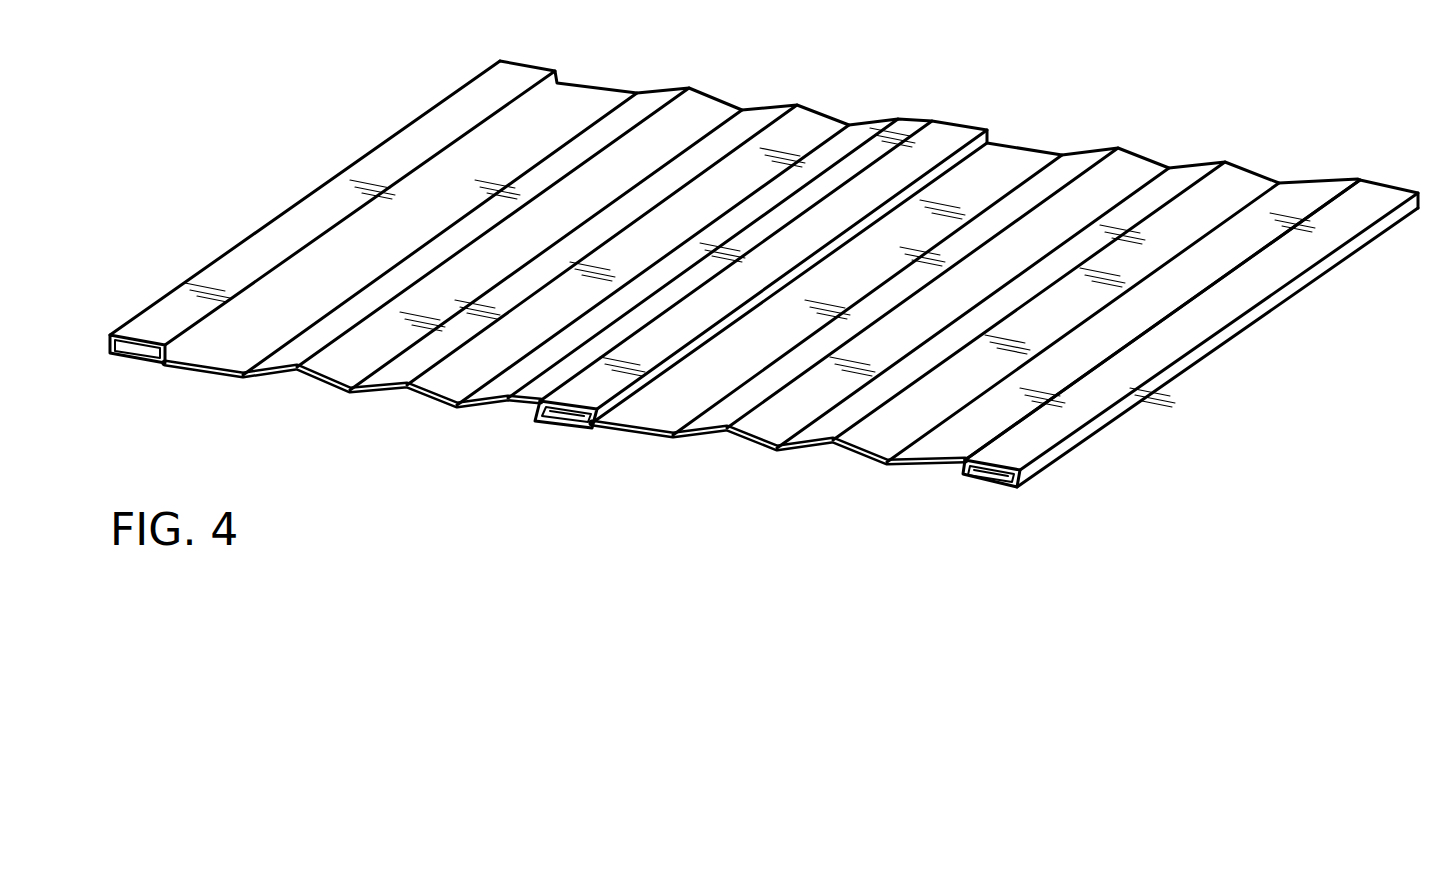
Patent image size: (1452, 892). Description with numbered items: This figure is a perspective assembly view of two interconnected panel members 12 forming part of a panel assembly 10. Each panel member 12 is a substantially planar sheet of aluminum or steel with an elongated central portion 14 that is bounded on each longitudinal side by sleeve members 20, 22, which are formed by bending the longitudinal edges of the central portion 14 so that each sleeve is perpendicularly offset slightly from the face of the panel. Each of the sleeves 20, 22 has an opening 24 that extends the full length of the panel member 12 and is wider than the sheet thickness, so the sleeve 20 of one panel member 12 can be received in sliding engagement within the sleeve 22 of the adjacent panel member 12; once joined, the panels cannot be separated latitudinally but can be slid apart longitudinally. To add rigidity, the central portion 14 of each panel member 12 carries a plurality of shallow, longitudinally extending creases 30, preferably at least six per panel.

The panel assembly 10 is at (619, 449).
The panel member 12 is at (722, 87).
The central portion 14 is at (392, 413).
The sleeve member 20 is at (287, 256).
The sleeve member 22 is at (563, 428).
The opening 24 is at (152, 379).
The crease 30 is at (795, 105).